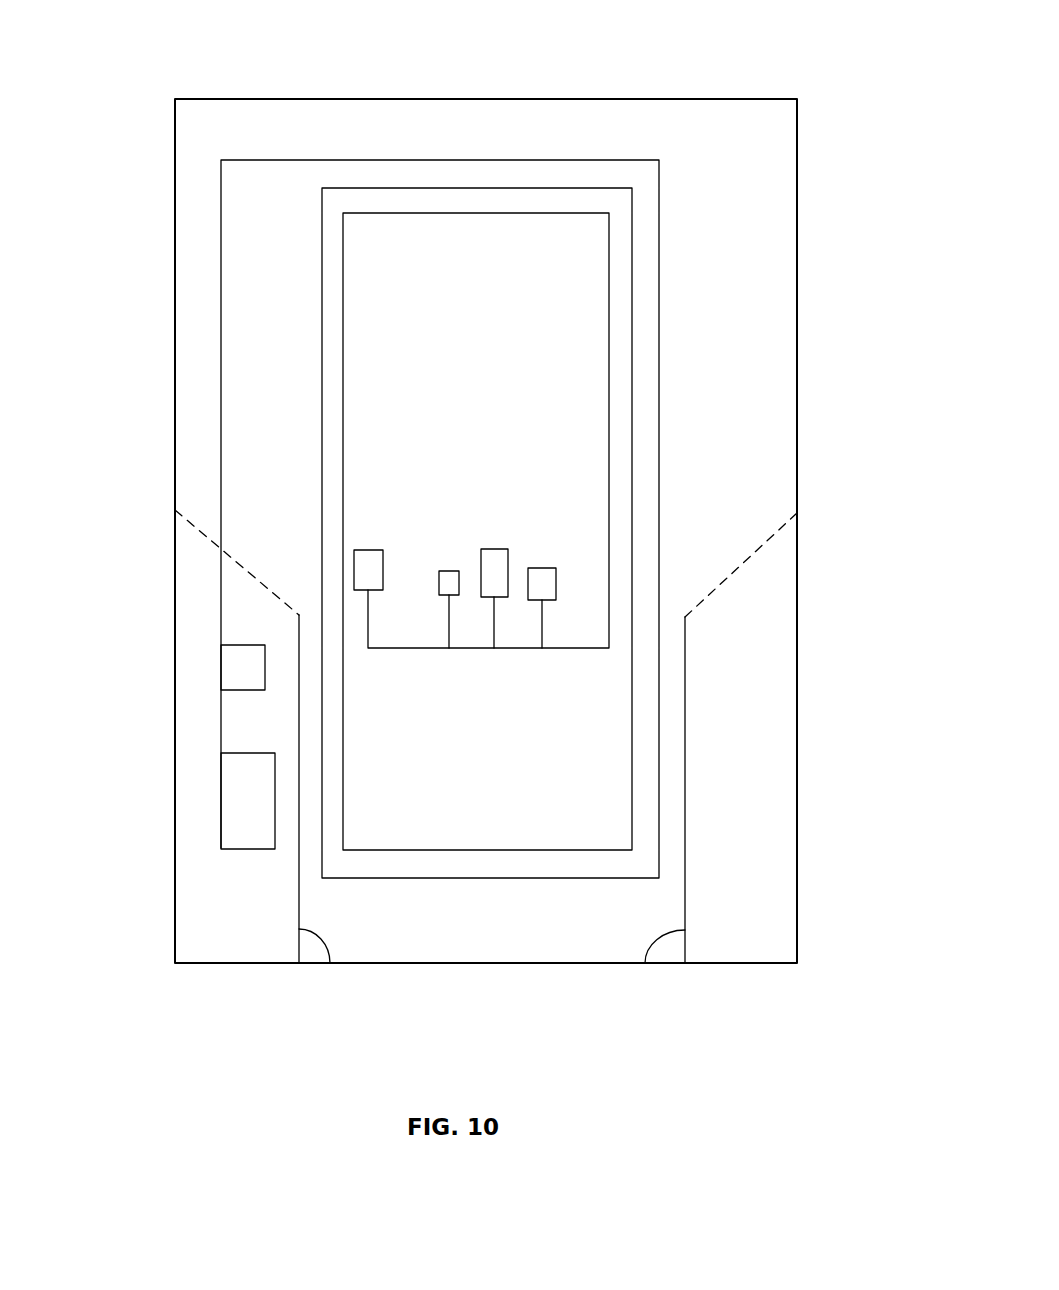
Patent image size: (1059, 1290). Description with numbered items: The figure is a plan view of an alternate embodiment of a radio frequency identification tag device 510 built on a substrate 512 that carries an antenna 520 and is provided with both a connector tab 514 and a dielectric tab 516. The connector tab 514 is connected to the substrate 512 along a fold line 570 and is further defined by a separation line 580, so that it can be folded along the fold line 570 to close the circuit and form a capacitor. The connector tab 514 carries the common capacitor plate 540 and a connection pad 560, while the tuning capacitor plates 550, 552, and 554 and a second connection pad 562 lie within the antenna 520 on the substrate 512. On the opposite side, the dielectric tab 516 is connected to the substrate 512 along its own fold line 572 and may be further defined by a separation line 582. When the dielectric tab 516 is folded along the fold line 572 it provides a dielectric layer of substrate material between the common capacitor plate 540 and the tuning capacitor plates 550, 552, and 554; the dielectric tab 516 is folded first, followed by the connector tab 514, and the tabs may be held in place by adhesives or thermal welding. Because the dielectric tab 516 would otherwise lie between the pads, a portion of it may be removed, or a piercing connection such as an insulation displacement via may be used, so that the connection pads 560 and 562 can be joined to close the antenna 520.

The radio frequency identification tag device 510 is at (150, 226).
The substrate 512 is at (677, 99).
The connector tab 514 is at (210, 927).
The dielectric tab 516 is at (755, 740).
The antenna 520 is at (659, 313).
The common capacitor plate 540 is at (239, 812).
The tuning capacitor plate 550 is at (450, 577).
The tuning capacitor plate 552 is at (495, 557).
The tuning capacitor plate 554 is at (544, 575).
The connection pad 560 is at (235, 667).
The connection pad 562 is at (364, 560).
The fold line 570 is at (237, 564).
The fold line 572 is at (732, 570).
The separation line 580 is at (330, 963).
The separation line 582 is at (645, 963).